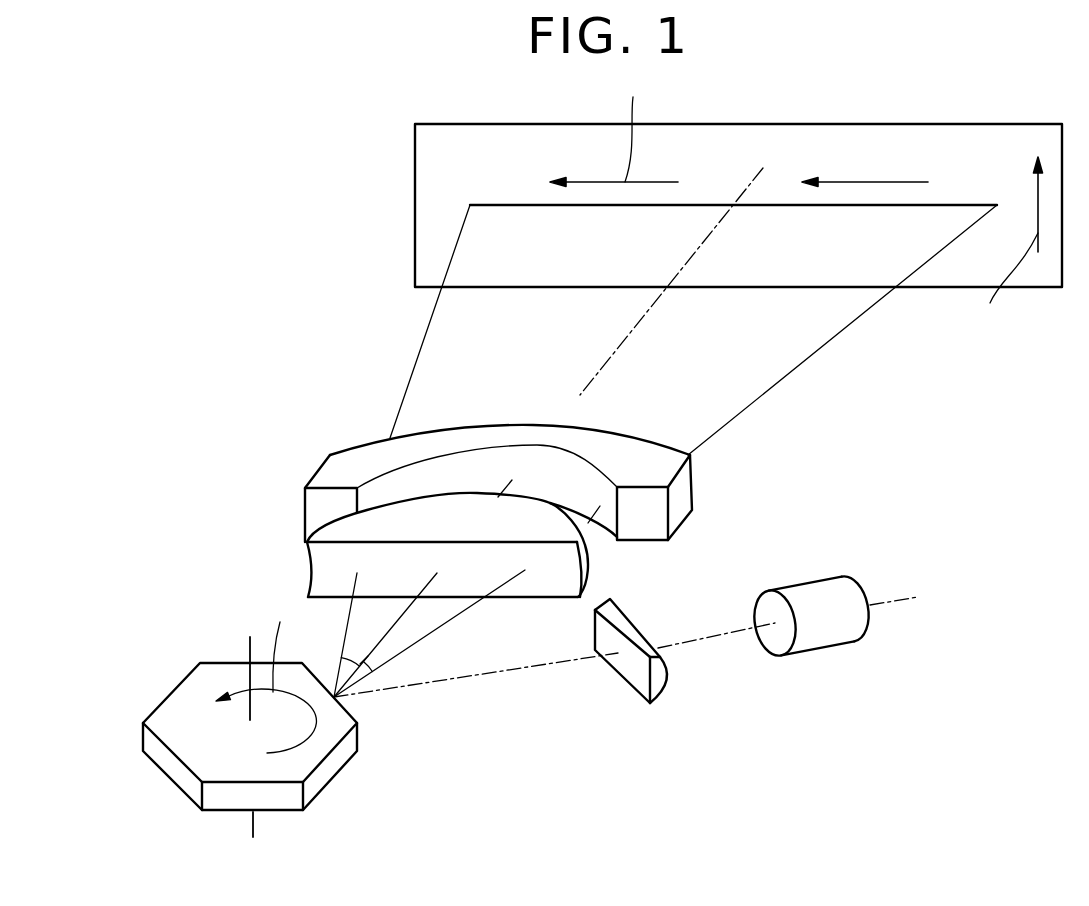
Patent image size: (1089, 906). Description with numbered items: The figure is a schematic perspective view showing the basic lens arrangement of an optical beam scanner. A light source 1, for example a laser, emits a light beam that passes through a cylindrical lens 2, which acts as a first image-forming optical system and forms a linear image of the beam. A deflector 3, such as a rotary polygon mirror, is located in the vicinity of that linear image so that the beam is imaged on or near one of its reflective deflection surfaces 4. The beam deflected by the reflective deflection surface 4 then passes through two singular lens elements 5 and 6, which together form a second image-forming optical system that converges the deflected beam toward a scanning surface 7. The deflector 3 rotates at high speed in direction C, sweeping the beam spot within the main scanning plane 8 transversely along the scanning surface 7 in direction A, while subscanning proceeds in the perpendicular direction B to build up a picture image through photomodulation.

The light source 1 is at (828, 642).
The cylindrical lens 2 is at (640, 685).
The deflector 3 is at (202, 688).
The reflective deflection surface 4 is at (347, 707).
The lens element 5 is at (340, 528).
The lens element 6 is at (343, 458).
The scanning surface 7 is at (428, 173).
The main scanning plane 8 is at (783, 330).